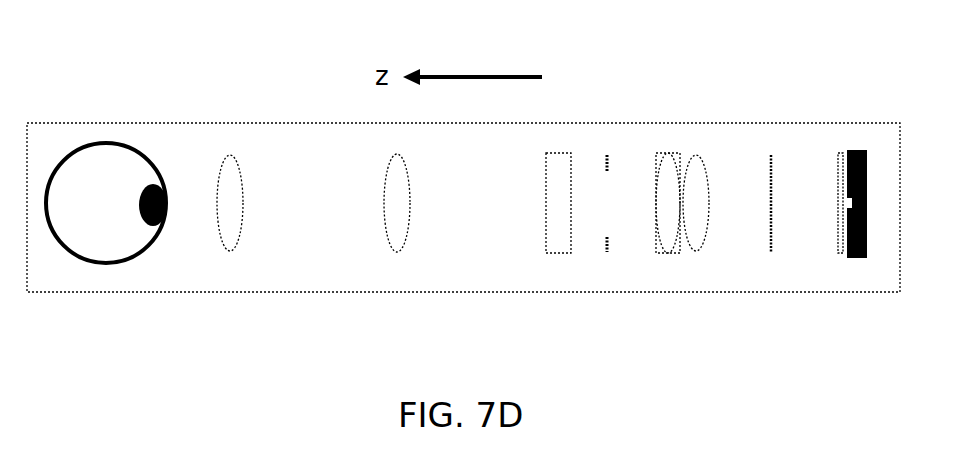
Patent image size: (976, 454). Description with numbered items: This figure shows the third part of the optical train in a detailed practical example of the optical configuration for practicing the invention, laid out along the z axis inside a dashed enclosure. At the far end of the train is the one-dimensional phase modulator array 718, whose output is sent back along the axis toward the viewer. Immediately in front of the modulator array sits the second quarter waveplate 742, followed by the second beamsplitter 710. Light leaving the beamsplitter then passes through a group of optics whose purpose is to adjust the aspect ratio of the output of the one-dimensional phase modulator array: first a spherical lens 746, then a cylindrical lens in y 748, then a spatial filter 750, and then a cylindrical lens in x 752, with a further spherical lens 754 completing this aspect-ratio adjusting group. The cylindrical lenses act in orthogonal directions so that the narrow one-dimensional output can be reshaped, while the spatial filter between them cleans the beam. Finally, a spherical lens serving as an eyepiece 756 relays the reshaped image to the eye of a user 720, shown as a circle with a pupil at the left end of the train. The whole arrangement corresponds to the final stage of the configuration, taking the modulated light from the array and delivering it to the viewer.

The eye of a user 720 is at (108, 243).
The spherical lens as eyepiece 756 is at (229, 235).
The spherical lens 754 is at (400, 228).
The cylindrical lens in x 752 is at (555, 243).
The spatial filter 750 is at (607, 243).
The cylindrical lens in y 748 is at (668, 163).
The spherical lens 746 is at (697, 236).
The second beamsplitter 710 is at (771, 236).
The second quarter waveplate 742 is at (840, 160).
The 1-D phase modulator array 718 is at (862, 258).